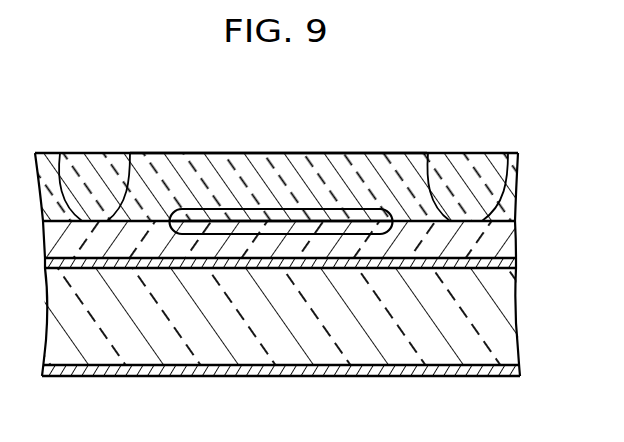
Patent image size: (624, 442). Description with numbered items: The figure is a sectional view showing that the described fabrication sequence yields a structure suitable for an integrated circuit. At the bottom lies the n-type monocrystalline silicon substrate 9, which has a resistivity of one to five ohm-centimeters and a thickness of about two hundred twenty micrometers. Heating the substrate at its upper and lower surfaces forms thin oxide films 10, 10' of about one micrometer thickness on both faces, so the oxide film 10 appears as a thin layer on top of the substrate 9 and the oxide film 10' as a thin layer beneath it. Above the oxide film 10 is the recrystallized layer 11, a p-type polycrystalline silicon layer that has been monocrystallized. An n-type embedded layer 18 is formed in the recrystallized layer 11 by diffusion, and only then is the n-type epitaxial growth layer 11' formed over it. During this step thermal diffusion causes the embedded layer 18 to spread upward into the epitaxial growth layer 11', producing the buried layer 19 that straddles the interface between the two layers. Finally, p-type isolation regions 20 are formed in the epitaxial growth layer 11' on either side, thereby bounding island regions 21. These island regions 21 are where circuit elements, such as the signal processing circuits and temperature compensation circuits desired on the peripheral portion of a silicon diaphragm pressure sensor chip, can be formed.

The n-type monocrystalline silicon substrate 9 is at (503, 325).
The oxide film 10 is at (315, 273).
The oxide film 10' is at (281, 400).
The recrystallized layer 11 is at (311, 239).
The epitaxial growth layer 11' is at (309, 187).
The embedded layer 18 is at (382, 213).
The buried layer 19 is at (305, 212).
The isolation regions 20 is at (103, 165).
The island regions 21 is at (227, 165).